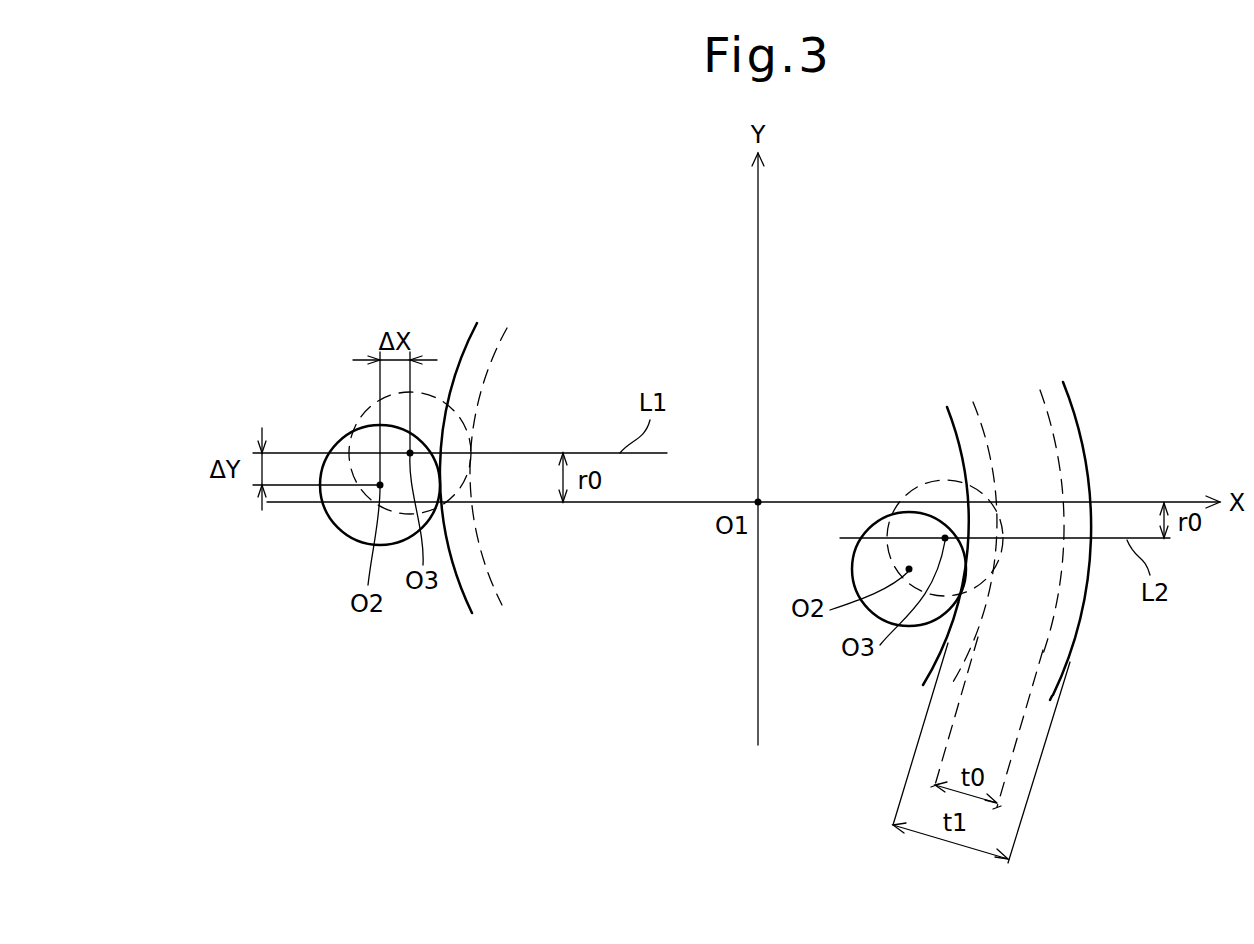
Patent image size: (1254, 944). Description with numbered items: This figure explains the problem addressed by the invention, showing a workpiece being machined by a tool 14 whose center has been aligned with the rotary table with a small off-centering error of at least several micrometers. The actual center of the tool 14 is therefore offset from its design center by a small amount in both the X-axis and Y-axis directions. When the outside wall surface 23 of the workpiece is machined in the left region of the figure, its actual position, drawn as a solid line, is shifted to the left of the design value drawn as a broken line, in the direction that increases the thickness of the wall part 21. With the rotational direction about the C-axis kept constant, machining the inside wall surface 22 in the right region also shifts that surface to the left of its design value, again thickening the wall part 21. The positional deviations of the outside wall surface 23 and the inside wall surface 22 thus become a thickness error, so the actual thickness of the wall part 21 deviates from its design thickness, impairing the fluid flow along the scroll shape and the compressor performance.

The tool 14 is at (340, 533).
The wall part 21 is at (1083, 415).
The inside wall surface 22 is at (923, 687).
The outside wall surface 23 is at (472, 613).